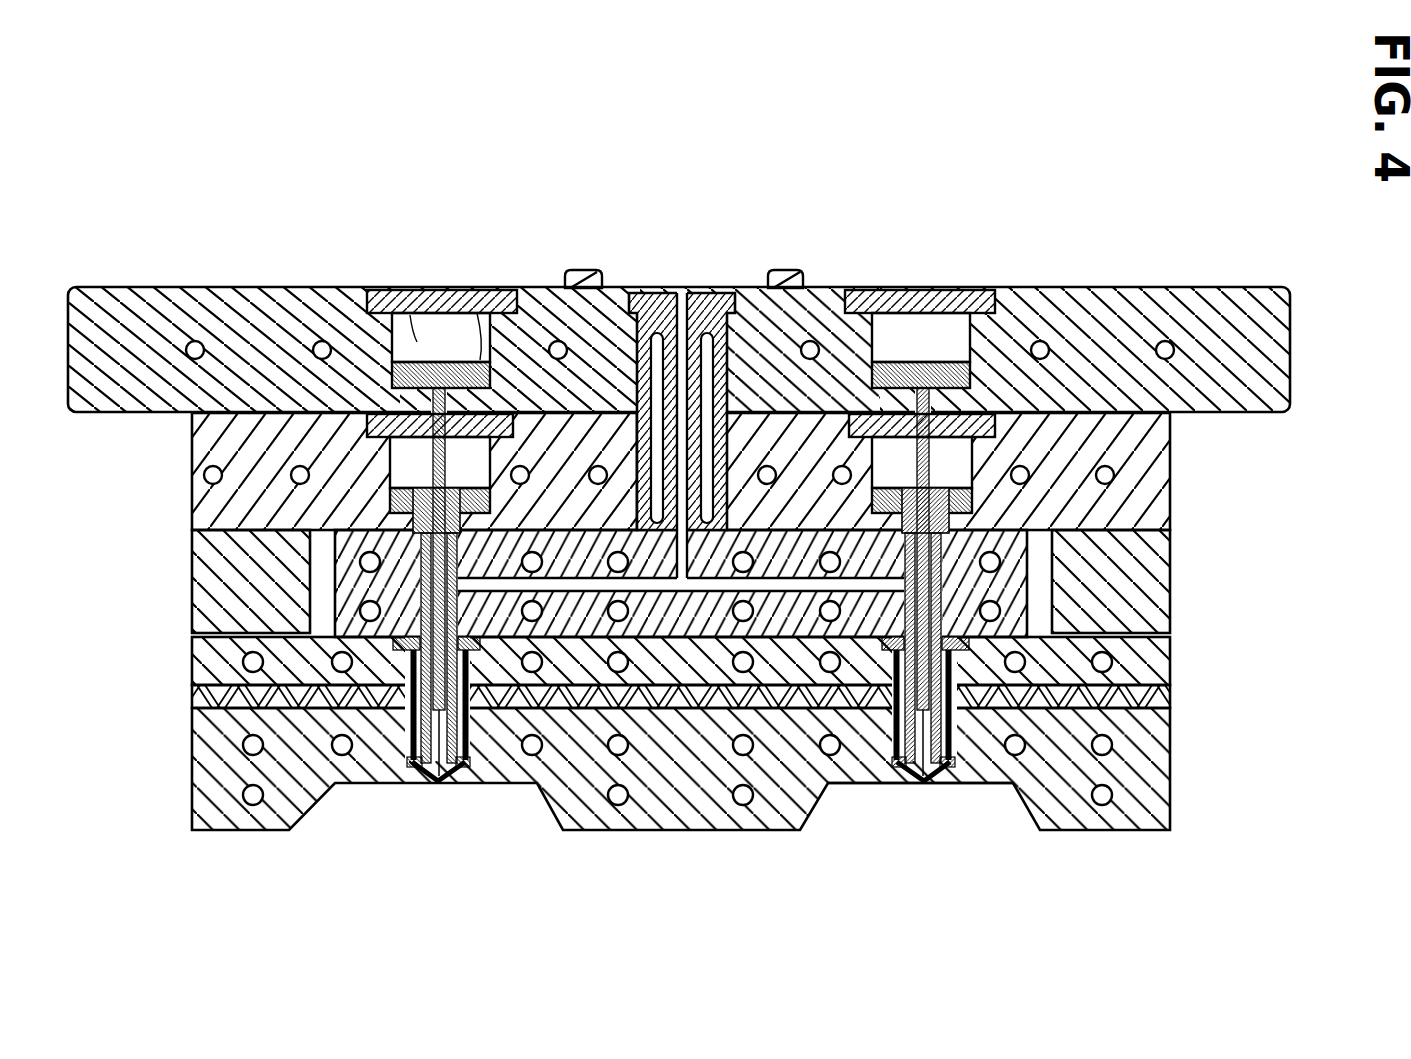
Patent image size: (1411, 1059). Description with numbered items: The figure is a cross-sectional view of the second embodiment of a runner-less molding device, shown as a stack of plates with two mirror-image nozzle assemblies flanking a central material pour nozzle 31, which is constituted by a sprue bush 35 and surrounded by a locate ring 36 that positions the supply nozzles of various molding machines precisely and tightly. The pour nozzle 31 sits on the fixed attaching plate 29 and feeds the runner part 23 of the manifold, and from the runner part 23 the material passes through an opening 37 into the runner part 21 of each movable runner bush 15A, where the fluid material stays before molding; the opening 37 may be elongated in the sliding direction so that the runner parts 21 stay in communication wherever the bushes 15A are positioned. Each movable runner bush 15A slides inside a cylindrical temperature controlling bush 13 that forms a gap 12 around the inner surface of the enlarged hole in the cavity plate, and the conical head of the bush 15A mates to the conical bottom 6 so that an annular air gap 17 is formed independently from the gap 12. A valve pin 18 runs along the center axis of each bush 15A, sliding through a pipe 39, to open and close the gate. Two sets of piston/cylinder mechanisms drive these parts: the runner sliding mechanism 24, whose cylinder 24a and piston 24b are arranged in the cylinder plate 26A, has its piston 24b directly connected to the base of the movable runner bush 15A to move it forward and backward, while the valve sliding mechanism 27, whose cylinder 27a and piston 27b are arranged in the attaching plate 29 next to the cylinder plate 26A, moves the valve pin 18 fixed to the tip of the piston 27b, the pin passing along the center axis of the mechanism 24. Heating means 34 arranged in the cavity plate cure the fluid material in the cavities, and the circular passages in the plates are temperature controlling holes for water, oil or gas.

The conical bottom 6 is at (903, 787).
The gap 12 is at (983, 767).
The temperature controlling bush 13 is at (960, 693).
The movable runner bush 15A is at (333, 582).
The annular air gap 17 is at (968, 783).
The valve pin 18 is at (927, 405).
The runner part 21 is at (412, 772).
The runner part of the manifold 23 is at (717, 592).
The runner sliding mechanism 24 is at (716, 406).
The cylinder 24a is at (393, 503).
The piston 24b is at (400, 517).
The cylinder plate 26A is at (1147, 455).
The valve sliding mechanism 27 is at (718, 291).
The cylinder 27a is at (387, 287).
The piston 27b is at (465, 293).
The attaching plate 29 is at (1205, 310).
The material pour nozzle 31 is at (685, 293).
The heating means 34 is at (243, 797).
The sprue bush 35 is at (718, 293).
The locate ring 36 is at (802, 292).
The opening 37 is at (500, 600).
The pipe 39 is at (1085, 632).